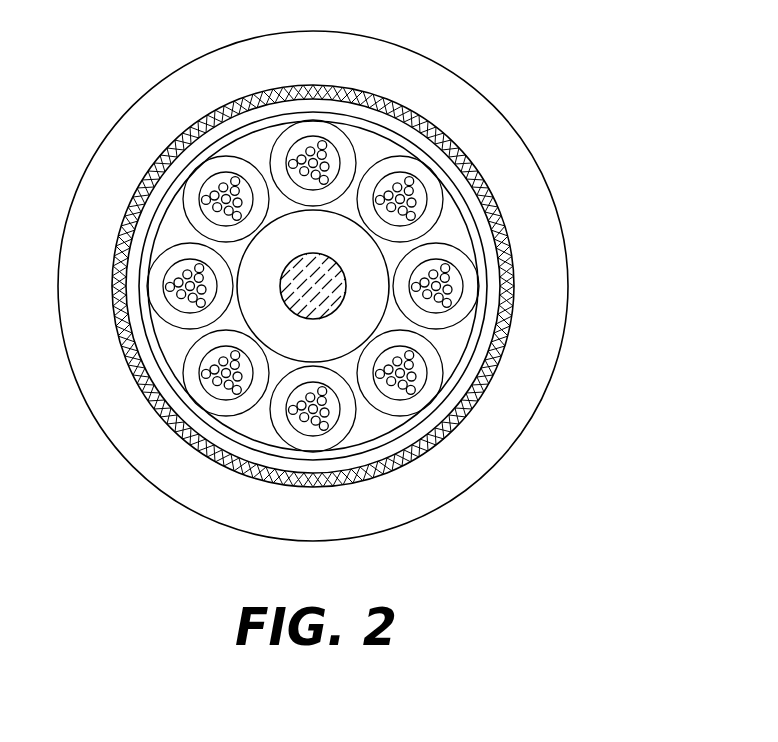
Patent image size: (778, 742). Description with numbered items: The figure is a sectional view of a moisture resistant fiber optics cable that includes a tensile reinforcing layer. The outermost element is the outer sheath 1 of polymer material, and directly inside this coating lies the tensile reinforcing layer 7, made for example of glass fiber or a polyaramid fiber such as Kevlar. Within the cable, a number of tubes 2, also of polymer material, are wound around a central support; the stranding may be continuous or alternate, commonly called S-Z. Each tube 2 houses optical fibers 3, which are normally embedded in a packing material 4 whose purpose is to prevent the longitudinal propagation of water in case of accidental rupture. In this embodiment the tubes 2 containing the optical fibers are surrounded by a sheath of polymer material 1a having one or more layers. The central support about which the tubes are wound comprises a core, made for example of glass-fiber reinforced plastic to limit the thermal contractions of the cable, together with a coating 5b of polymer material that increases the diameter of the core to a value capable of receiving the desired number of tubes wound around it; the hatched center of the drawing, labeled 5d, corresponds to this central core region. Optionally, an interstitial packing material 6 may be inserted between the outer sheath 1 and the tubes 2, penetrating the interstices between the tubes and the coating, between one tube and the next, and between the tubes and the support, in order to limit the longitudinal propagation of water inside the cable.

The outer sheath 1 is at (475, 120).
The sheath of polymer material 1a is at (395, 427).
The tube 2 is at (303, 132).
The optical fiber 3 is at (430, 299).
The packing material 4 is at (524, 286).
The coating 5b is at (355, 315).
The central strength member 5d is at (345, 295).
The interstitial packing material 6 is at (367, 420).
The tensile reinforcing layer 7 is at (497, 205).